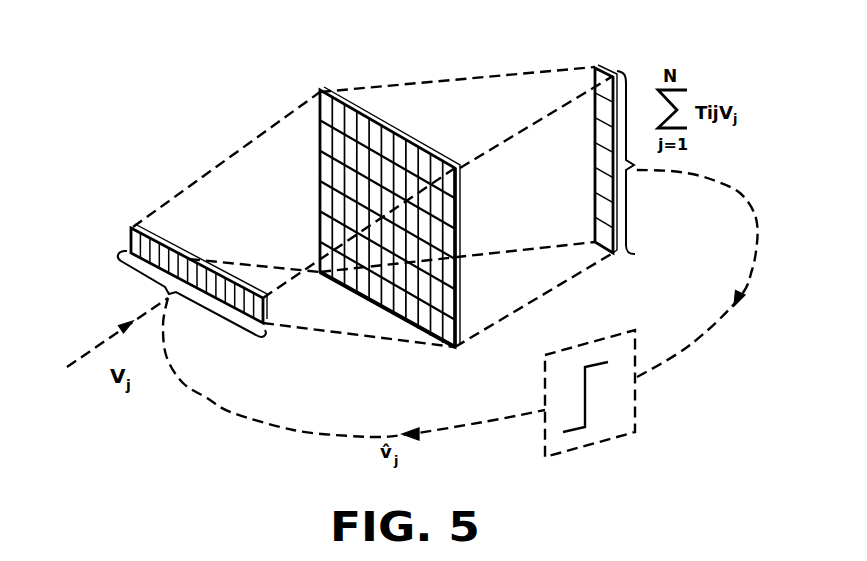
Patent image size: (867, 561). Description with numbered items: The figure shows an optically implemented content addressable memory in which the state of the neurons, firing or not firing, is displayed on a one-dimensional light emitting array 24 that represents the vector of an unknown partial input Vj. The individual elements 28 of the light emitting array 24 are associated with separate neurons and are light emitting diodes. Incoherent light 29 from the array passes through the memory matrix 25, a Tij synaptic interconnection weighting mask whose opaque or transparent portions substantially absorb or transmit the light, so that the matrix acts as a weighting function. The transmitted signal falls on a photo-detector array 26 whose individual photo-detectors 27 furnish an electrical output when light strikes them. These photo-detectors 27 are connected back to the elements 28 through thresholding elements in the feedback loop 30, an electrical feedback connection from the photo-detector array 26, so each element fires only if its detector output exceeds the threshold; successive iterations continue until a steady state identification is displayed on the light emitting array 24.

The light emitting array 24 is at (153, 283).
The memory matrix 25 is at (372, 300).
The photo-detector array 26 is at (618, 63).
The photo-detector 27 is at (605, 187).
The light emitting element 28 is at (222, 292).
The incoherent light 29 is at (265, 172).
The feedback loop 30 is at (586, 340).